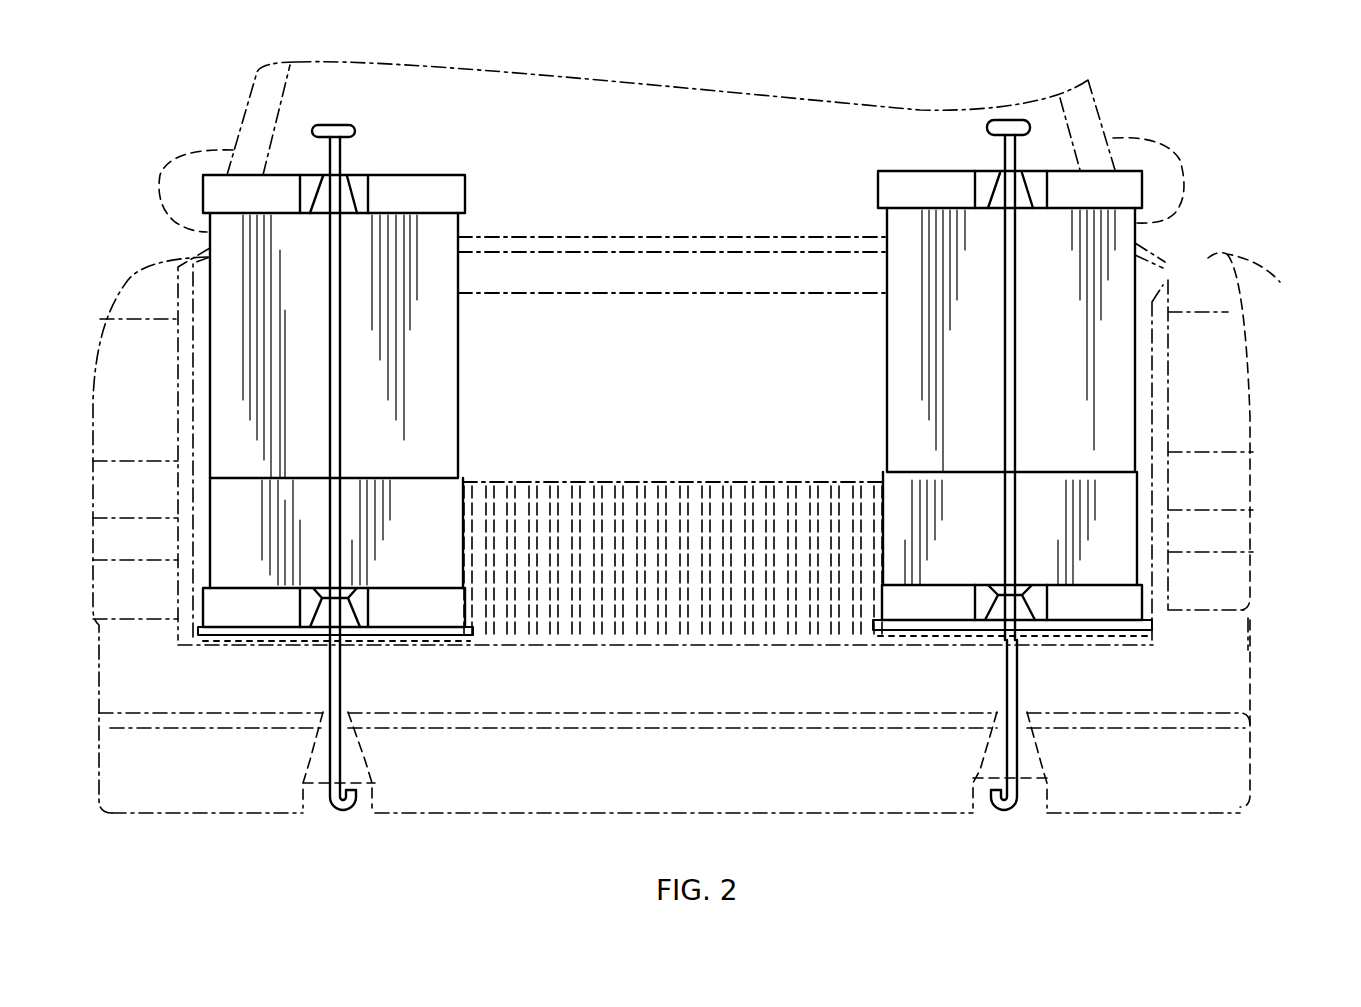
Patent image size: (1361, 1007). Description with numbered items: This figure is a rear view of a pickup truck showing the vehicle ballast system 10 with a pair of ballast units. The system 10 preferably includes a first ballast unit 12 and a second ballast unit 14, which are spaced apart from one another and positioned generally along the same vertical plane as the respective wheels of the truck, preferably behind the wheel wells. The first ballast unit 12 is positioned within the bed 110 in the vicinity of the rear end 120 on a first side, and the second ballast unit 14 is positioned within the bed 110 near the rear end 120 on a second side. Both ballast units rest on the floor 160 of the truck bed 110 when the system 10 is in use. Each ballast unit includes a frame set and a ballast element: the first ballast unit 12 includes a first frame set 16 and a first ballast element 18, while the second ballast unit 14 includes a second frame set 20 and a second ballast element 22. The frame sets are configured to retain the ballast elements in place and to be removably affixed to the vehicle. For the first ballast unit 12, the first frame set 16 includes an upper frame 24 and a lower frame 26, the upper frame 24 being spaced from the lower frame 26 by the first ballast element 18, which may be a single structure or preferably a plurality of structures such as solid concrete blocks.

The vehicle ballast system 10 is at (428, 80).
The first ballast unit 12 is at (945, 145).
The second ballast unit 14 is at (224, 148).
The first frame set 16 is at (878, 185).
The first ballast element 18 is at (1133, 397).
The second frame set 20 is at (402, 173).
The second ballast element 22 is at (460, 280).
The upper frame 24 is at (1142, 178).
The lower frame 26 is at (1147, 598).
The bed 110 is at (678, 328).
The rear end 120 is at (1280, 283).
The floor 160 is at (595, 647).